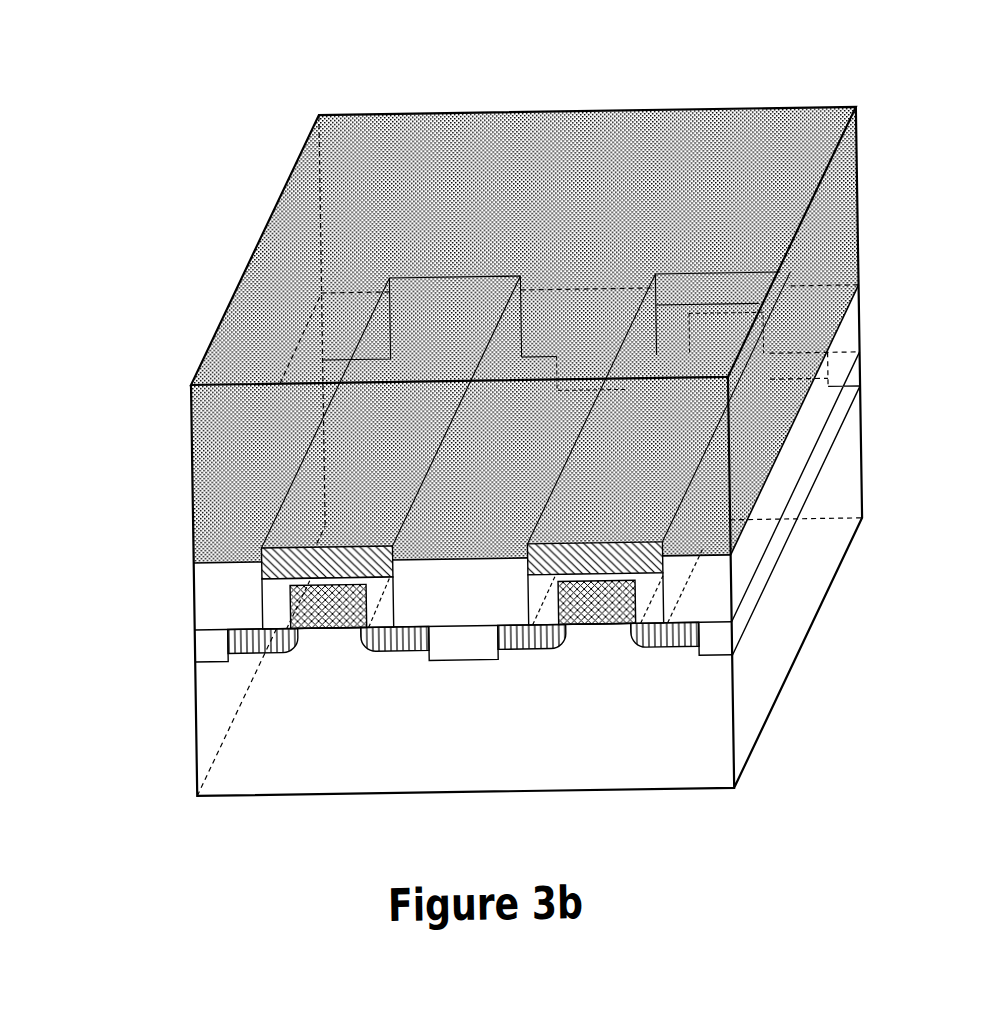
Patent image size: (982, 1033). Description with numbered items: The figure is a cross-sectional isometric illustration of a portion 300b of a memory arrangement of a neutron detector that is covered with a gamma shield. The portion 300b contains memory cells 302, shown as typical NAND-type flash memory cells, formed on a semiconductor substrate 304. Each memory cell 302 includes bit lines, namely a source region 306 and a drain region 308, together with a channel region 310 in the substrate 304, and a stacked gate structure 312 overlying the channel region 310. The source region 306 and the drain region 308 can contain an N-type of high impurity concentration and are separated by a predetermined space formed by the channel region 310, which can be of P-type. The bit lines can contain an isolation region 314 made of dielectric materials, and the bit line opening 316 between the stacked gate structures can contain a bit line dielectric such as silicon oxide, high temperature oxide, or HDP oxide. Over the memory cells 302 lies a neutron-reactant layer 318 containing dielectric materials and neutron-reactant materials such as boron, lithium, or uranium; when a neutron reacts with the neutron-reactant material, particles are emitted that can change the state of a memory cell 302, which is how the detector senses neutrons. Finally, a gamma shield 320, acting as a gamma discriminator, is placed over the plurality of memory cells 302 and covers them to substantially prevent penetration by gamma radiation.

The portion of a memory arrangement covered with a gamma shield 300b is at (762, 94).
The memory cells 302 is at (197, 619).
The semiconductor substrate 304 is at (730, 712).
The source region 306 is at (273, 656).
The drain region 308 is at (376, 655).
The channel region 310 is at (321, 669).
The stacked gate structure 312 is at (287, 603).
The isolation region 314 is at (459, 664).
The bit line opening 316 is at (440, 590).
The neutron-reactant layer 318 is at (268, 556).
The gamma shield 320 is at (823, 242).